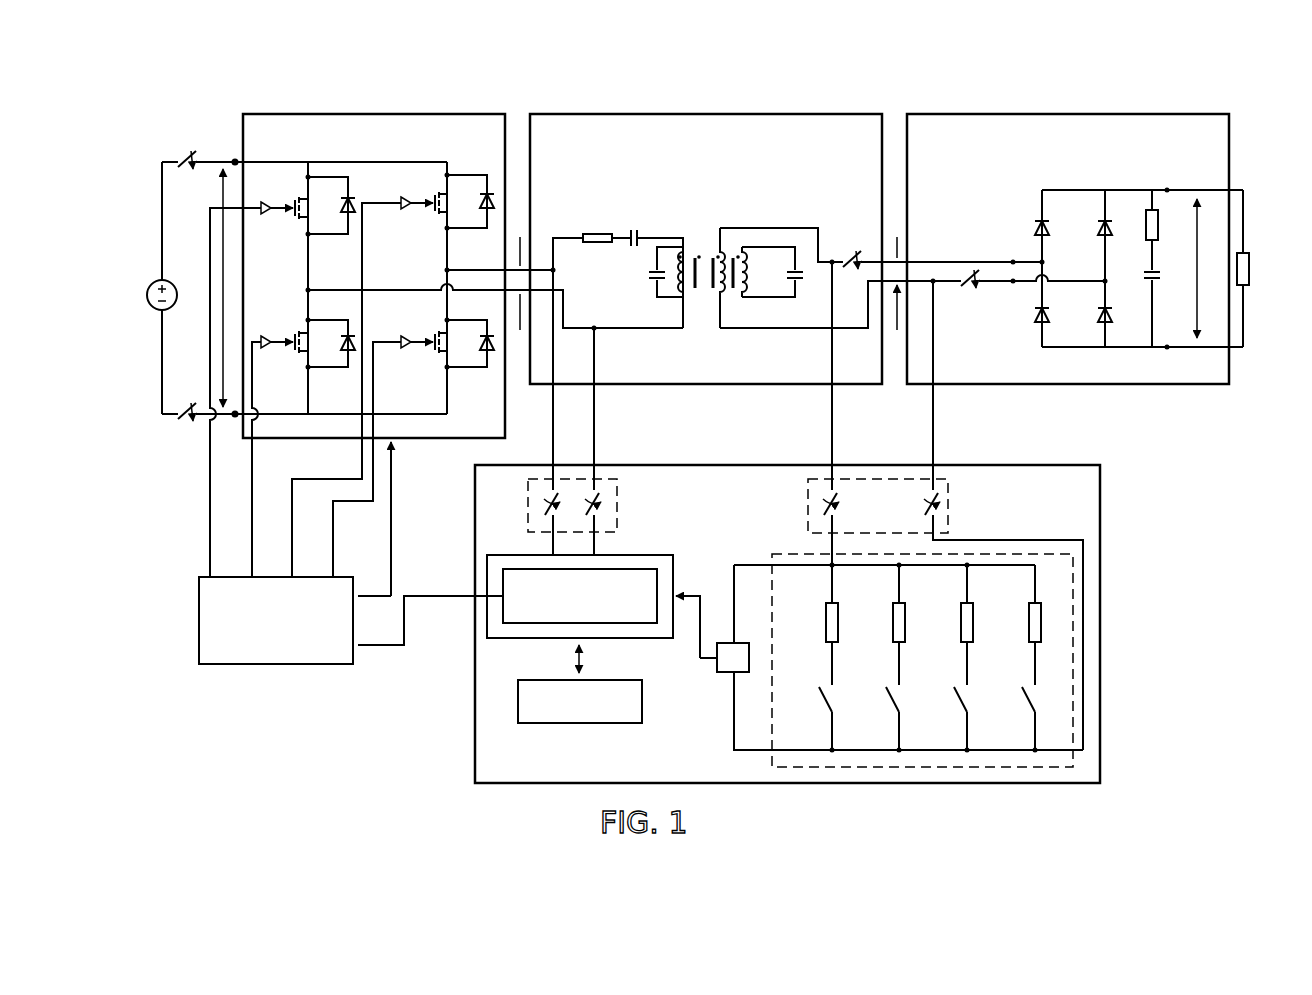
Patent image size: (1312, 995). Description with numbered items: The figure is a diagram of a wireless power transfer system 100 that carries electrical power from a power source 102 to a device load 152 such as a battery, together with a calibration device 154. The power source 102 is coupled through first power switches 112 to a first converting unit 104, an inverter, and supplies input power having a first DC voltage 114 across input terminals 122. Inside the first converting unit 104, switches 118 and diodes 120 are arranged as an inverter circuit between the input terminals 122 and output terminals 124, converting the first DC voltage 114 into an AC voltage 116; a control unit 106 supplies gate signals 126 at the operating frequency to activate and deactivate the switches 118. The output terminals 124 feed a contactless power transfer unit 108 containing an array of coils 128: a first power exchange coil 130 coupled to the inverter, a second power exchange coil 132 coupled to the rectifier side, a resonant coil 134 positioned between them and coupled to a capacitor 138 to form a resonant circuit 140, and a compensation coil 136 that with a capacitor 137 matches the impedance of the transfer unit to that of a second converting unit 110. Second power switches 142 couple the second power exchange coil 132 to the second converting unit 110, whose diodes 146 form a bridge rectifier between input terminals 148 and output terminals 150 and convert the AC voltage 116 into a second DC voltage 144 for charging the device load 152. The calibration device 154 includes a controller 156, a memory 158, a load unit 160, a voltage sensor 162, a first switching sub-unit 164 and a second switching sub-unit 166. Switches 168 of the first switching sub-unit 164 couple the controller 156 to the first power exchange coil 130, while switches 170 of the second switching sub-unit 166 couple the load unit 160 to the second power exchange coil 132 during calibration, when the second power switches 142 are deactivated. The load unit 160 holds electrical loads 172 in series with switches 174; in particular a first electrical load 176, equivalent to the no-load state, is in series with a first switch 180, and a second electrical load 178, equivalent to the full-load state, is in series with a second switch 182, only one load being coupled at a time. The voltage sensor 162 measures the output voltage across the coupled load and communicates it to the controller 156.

The wireless power transfer system 100 is at (268, 743).
The power source 102 is at (148, 287).
The first converting unit 104 is at (373, 114).
The control unit 106 is at (199, 647).
The contactless power transfer unit 108 is at (666, 114).
The second converting unit 110 is at (1083, 114).
The first power switches 112 is at (186, 158).
The first DC voltage 114 is at (222, 203).
The AC voltage 116 is at (520, 245).
The switches 118 is at (296, 212).
The diodes 120 is at (345, 215).
The input terminals 122 is at (234, 160).
The output terminals 124 is at (470, 288).
The gate signals 126 is at (333, 530).
The array of coils 128 is at (749, 281).
The first power exchange coil 130 is at (683, 290).
The second power exchange coil 132 is at (722, 283).
The resonant coil 134 is at (712, 290).
The compensation coil 136 is at (745, 275).
The capacitor 137 is at (797, 282).
The capacitor 138 is at (650, 276).
The resonant circuit 140 is at (655, 300).
The second power switches 142 is at (852, 257).
The second DC voltage 144 is at (1197, 215).
The diodes 146 is at (1105, 228).
The input terminals 148 is at (1013, 281).
The output terminals 150 is at (1167, 190).
The device load 152 is at (1250, 265).
The calibration device 154 is at (1082, 782).
The controller 156 is at (503, 609).
The memory 158 is at (518, 702).
The load unit 160 is at (942, 662).
The voltage sensor 162 is at (717, 668).
The first switching sub-unit 164 is at (594, 480).
The second switching sub-unit 166 is at (899, 481).
The switches 168 is at (594, 505).
The switches 170 is at (933, 505).
The electrical loads 172 is at (970, 658).
The switches 174 is at (970, 741).
The first electrical load 176 is at (826, 625).
The second electrical load 178 is at (1042, 612).
The first switch 180 is at (824, 700).
The second switch 182 is at (1028, 703).